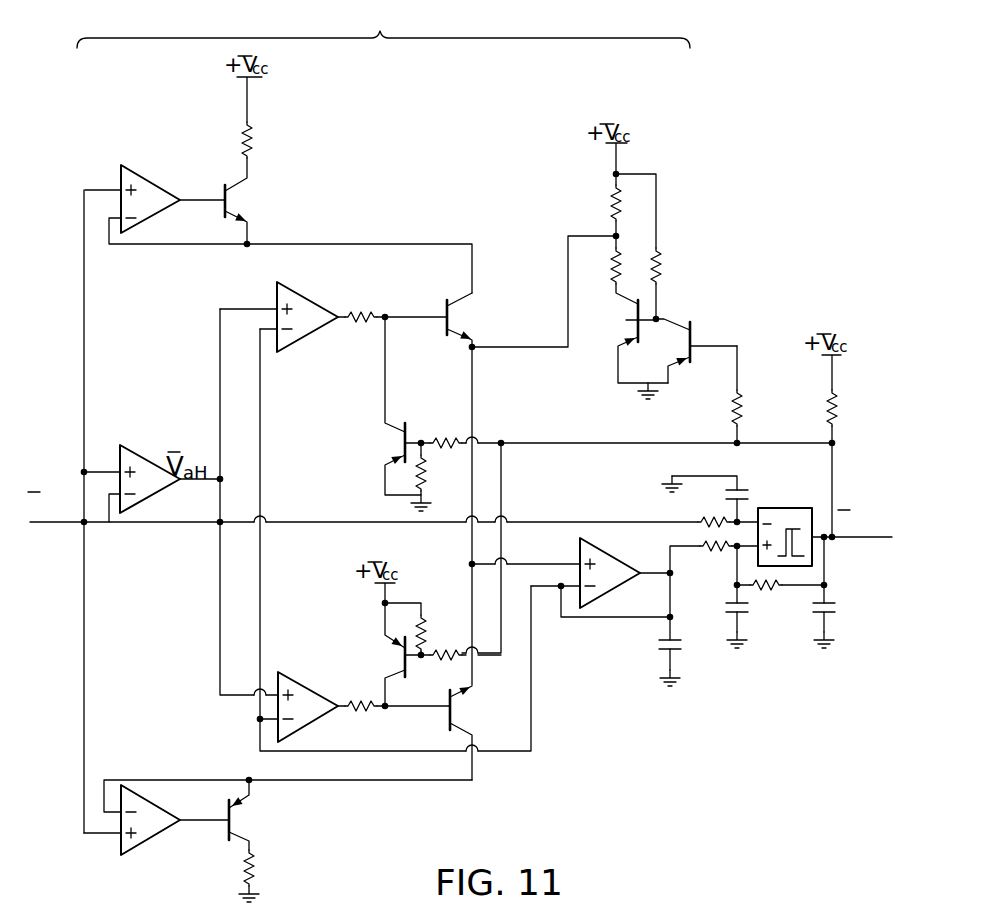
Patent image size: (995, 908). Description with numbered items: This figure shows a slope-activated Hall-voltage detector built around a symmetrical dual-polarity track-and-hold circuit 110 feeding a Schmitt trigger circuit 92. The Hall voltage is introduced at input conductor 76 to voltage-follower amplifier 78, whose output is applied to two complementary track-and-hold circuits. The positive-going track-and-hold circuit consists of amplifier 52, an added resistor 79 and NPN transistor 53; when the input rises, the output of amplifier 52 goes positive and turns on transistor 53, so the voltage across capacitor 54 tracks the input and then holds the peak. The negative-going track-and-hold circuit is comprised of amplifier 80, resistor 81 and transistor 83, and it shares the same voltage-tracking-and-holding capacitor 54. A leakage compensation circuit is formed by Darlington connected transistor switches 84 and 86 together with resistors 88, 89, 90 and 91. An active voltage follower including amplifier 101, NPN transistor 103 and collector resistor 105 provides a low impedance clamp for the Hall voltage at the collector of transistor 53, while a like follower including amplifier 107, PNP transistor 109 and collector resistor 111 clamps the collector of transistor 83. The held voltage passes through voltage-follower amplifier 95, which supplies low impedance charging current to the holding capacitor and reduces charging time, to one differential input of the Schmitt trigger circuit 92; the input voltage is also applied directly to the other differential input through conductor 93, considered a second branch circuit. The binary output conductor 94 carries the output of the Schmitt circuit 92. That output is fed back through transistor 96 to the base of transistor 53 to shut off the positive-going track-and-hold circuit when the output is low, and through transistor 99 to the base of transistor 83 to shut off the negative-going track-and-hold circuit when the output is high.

The symmetrical dual-polarity track-and-hold circuit 110 is at (383, 24).
The amplifier 101 is at (156, 196).
The NPN transistor 103 is at (240, 197).
The collector resistor 105 is at (261, 136).
The amplifier 52 is at (308, 315).
The resistor 79 is at (368, 308).
The NPN transistor 53 is at (447, 305).
The transistor 96 is at (400, 439).
The voltage-follower amplifier 78 is at (150, 470).
The input conductor 76 is at (48, 526).
The conductor 93 is at (560, 522).
The amplifier 80 is at (308, 692).
The resistor 81 is at (360, 712).
The transistor 83 is at (448, 722).
The transistor 99 is at (400, 656).
The amplifier 107 is at (155, 816).
The PNP transistor 109 is at (244, 820).
The collector resistor 111 is at (258, 862).
The resistor 91 is at (610, 205).
The resistor 90 is at (610, 275).
The resistor 89 is at (660, 268).
The transistor switch 84 is at (626, 320).
The transistor switch 86 is at (697, 336).
The resistor 88 is at (741, 404).
The voltage-follower amplifier 95 is at (614, 567).
The capacitor 54 is at (652, 645).
The Schmitt trigger circuit 92 is at (778, 508).
The binary output conductor 94 is at (868, 541).